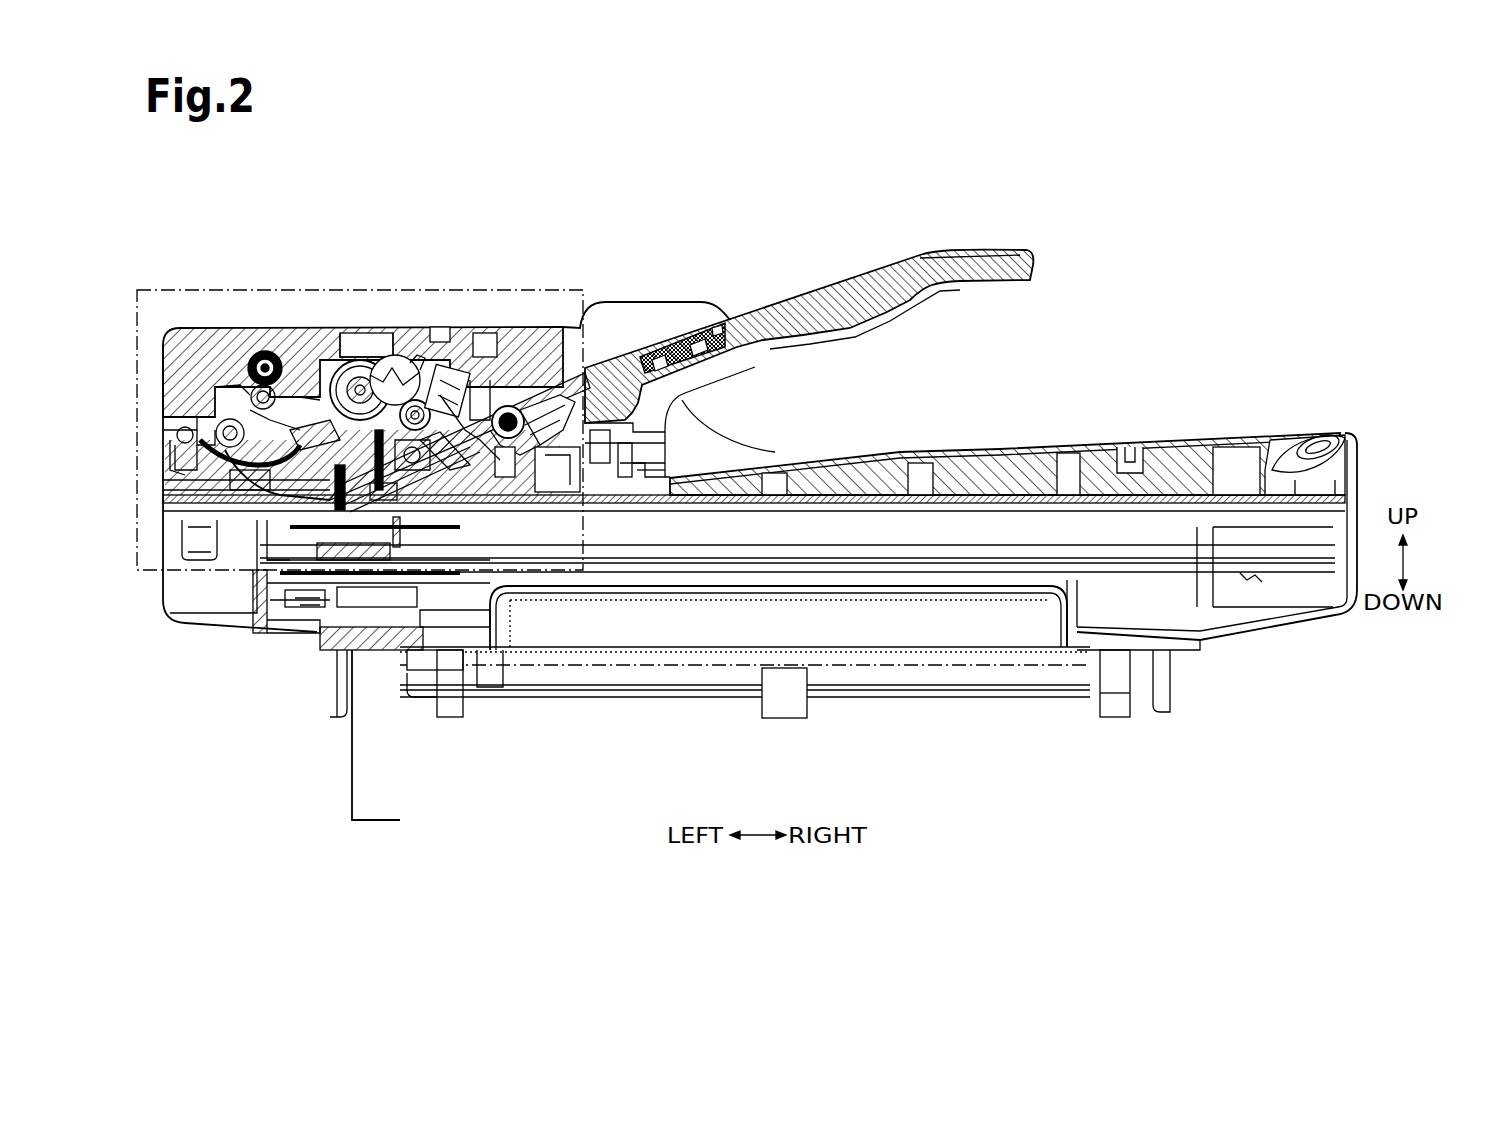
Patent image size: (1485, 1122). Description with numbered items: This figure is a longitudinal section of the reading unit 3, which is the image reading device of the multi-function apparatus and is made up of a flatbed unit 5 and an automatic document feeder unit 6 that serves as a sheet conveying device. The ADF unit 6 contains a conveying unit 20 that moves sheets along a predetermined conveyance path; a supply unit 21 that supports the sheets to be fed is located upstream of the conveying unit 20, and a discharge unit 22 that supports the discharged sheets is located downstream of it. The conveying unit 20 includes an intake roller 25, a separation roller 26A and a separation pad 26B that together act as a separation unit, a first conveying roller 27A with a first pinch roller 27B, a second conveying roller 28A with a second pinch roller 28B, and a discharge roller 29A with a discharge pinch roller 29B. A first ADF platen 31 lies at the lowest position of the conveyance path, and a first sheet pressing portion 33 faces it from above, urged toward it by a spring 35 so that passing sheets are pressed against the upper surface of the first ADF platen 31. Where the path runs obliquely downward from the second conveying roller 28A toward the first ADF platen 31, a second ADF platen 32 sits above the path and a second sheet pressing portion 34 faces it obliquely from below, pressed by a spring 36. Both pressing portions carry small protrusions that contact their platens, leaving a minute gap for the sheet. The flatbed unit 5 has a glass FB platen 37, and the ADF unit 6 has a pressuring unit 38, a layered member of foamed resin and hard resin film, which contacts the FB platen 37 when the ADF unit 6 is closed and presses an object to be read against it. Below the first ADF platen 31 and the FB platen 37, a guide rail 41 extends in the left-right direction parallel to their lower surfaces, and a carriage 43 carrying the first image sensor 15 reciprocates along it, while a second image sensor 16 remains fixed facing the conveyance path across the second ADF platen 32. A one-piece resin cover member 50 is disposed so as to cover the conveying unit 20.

The reading unit 3 is at (1222, 268).
The flatbed unit 5 is at (1330, 625).
The automatic document feeder unit 6 is at (1328, 436).
The first image sensor 15 is at (323, 510).
The second image sensor 16 is at (292, 400).
The conveying unit 20 is at (360, 345).
The supply unit 21 is at (618, 353).
The discharge unit 22 is at (815, 472).
The intake roller 25 is at (462, 390).
The separation roller 26A is at (372, 380).
The separation pad 26B is at (348, 370).
The first conveying roller 27A is at (232, 400).
The first pinch roller 27B is at (255, 395).
The second conveying roller 28A is at (207, 430).
The second pinch roller 28B is at (188, 430).
The discharge roller 29A is at (503, 415).
The discharge pinch roller 29B is at (523, 413).
The first ADF platen 31 is at (287, 510).
The second ADF platen 32 is at (277, 513).
The first sheet pressing portion 33 is at (423, 503).
The second sheet pressing portion 34 is at (237, 487).
The spring 35 is at (477, 503).
The spring 36 is at (233, 490).
The FB platen 37 is at (630, 507).
The pressuring unit 38 is at (697, 503).
The guide rail 41 is at (847, 550).
The carriage 43 is at (360, 577).
The cover member 50 is at (445, 390).